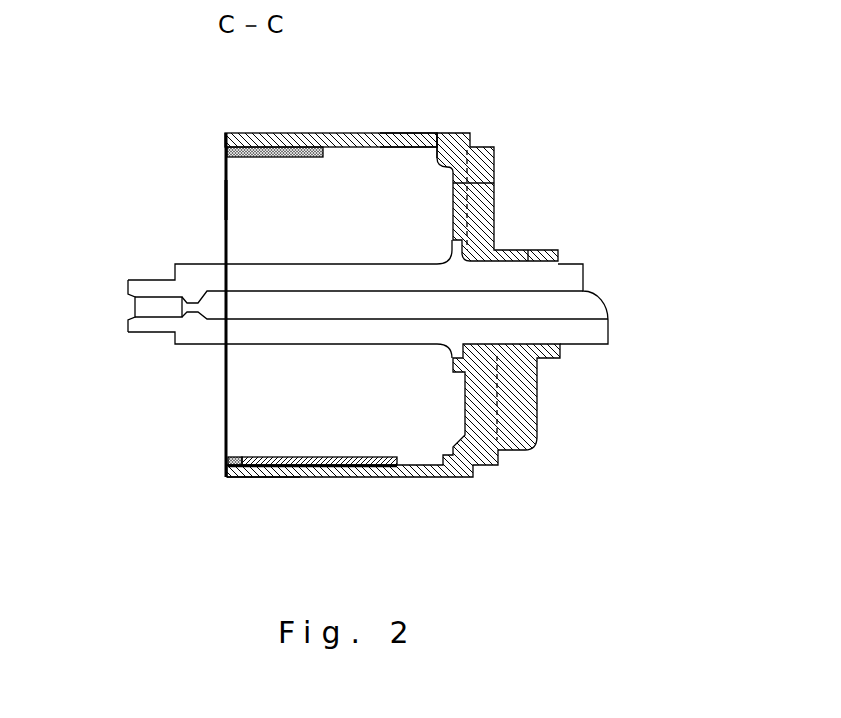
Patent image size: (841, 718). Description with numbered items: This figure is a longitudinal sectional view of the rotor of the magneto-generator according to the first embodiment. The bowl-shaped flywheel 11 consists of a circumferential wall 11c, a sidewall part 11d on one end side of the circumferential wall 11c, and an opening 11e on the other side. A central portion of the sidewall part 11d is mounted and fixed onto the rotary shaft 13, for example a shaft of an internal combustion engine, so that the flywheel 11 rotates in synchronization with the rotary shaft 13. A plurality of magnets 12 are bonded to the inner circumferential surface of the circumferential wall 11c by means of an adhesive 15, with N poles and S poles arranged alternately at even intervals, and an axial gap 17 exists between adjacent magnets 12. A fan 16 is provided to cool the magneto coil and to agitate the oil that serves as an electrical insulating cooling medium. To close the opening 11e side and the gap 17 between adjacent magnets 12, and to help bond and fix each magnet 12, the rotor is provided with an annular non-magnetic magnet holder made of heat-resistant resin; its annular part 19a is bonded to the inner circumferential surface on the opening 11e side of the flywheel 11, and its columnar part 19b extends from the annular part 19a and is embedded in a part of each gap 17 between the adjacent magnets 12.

The flywheel 11 is at (343, 133).
The circumferential wall 11c is at (387, 133).
The sidewall part 11d is at (495, 213).
The opening 11e is at (225, 200).
The magnets 12 is at (310, 457).
The rotary shaft 13 is at (588, 345).
The adhesive 15 is at (253, 480).
The fan 16 is at (495, 178).
The gap 17 is at (405, 147).
The annular part 19a is at (237, 455).
The columnar part 19b is at (307, 105).